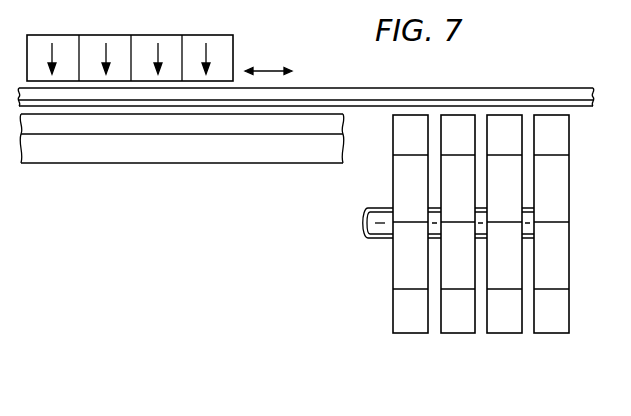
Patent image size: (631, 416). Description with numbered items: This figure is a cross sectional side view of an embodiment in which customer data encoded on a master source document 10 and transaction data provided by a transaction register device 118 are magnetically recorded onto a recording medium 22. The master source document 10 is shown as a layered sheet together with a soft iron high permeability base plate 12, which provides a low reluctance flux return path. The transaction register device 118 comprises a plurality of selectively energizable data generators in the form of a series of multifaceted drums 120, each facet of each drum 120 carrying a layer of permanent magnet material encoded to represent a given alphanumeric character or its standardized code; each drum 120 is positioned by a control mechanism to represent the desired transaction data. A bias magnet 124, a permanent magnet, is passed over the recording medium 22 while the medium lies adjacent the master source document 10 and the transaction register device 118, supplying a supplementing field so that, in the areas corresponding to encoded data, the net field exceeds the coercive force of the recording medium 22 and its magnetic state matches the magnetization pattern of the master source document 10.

The bias magnet 124 is at (172, 35).
The recording medium 22 is at (425, 88).
The master source document 10 is at (182, 125).
The base plate 12 is at (210, 159).
The transaction register device 118 is at (435, 244).
The multifaceted drums 120 is at (553, 326).